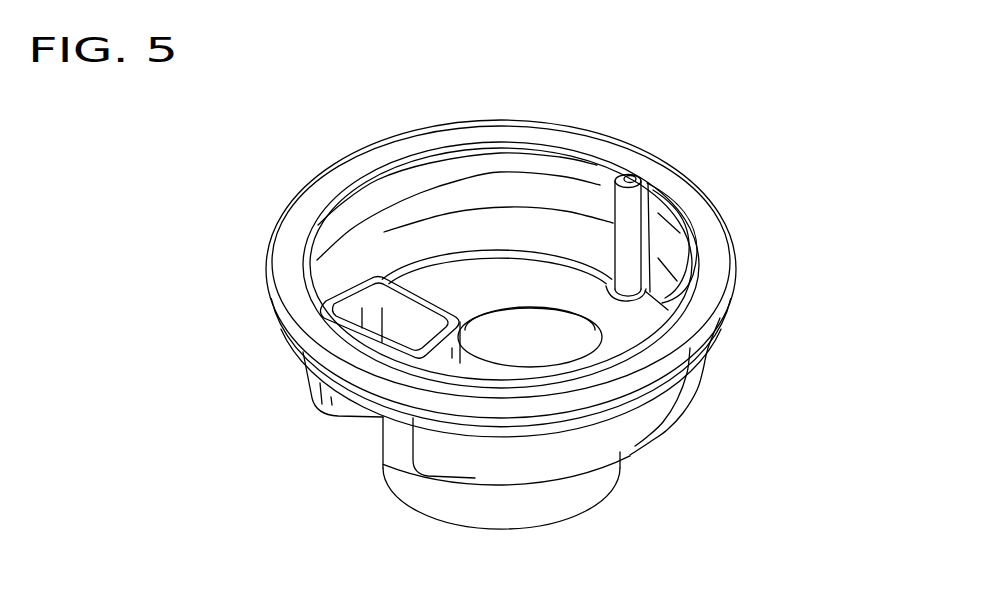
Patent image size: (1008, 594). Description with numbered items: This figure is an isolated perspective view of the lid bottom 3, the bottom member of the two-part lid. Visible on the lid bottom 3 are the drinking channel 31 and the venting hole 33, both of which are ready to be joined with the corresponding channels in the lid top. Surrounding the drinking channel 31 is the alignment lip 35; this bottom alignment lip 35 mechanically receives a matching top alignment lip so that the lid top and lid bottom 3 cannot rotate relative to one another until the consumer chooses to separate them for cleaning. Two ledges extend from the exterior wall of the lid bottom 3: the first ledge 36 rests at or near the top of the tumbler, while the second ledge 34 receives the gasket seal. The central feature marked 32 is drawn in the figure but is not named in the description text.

The lid bottom 3 is at (244, 124).
The drinking channel 31 is at (373, 330).
The central chamber 32 is at (495, 338).
The venting hole 33 is at (632, 176).
The second ledge 34 is at (702, 350).
The alignment lip 35 is at (343, 291).
The first ledge 36 is at (705, 192).